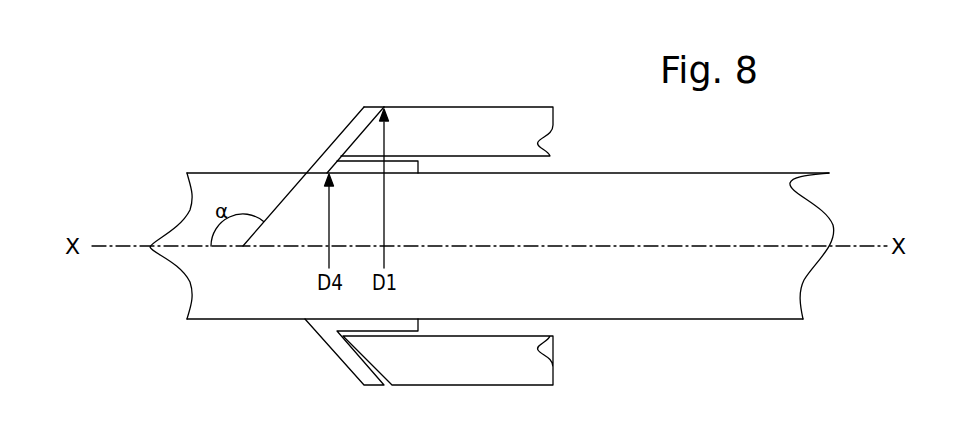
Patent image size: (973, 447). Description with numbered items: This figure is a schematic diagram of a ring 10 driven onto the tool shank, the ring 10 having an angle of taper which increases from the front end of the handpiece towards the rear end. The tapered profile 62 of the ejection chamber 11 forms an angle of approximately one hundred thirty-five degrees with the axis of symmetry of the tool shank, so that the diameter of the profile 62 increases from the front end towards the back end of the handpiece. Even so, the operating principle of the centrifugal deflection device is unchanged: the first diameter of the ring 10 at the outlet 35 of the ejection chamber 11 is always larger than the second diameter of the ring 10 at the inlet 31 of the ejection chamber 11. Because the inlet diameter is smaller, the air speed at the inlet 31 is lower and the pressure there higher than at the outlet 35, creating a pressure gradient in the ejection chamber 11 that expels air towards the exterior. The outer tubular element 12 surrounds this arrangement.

The ring 10 is at (297, 152).
The ejection chamber 11 is at (373, 134).
The outer tube 12 is at (488, 86).
The inlet of ejection chamber 31 is at (346, 174).
The outlet of ejection chamber 35 is at (384, 95).
The profile of ejection chamber 62 is at (336, 156).